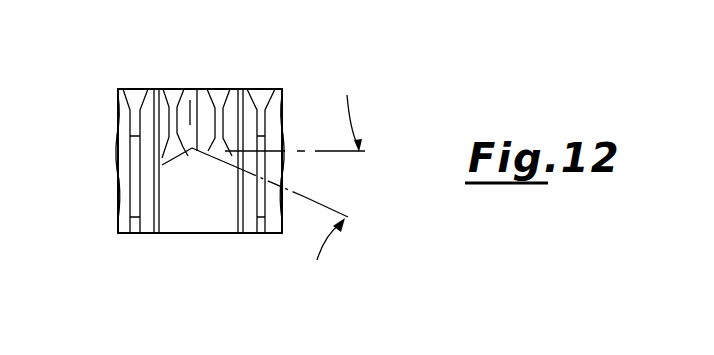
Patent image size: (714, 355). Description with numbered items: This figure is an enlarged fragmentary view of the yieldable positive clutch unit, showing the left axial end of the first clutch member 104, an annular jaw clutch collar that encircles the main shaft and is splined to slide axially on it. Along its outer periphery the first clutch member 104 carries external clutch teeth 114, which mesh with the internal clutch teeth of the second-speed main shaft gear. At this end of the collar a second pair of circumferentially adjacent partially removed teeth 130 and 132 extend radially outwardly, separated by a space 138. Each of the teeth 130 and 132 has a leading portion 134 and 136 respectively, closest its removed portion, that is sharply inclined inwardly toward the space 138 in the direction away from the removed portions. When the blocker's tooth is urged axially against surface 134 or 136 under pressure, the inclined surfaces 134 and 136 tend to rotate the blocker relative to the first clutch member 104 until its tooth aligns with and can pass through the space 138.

The first clutch member 104 is at (137, 78).
The external clutch teeth 114 is at (132, 165).
The partially removed tooth 130 is at (220, 90).
The partially removed tooth 132 is at (173, 90).
The leading portion 134 is at (217, 158).
The leading portion 136 is at (181, 153).
The space 138 is at (191, 110).